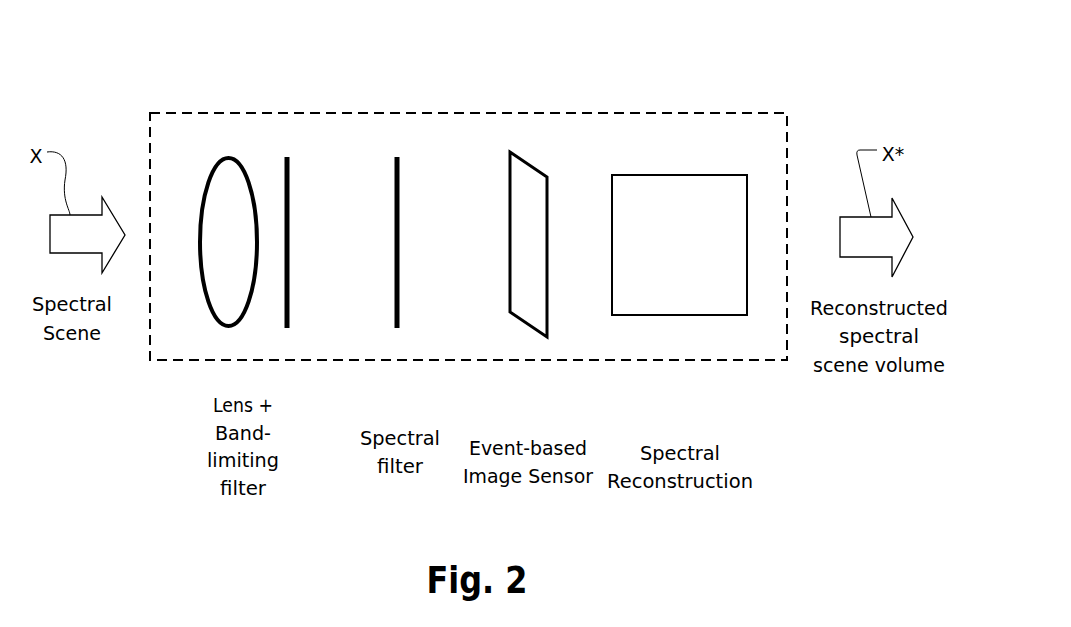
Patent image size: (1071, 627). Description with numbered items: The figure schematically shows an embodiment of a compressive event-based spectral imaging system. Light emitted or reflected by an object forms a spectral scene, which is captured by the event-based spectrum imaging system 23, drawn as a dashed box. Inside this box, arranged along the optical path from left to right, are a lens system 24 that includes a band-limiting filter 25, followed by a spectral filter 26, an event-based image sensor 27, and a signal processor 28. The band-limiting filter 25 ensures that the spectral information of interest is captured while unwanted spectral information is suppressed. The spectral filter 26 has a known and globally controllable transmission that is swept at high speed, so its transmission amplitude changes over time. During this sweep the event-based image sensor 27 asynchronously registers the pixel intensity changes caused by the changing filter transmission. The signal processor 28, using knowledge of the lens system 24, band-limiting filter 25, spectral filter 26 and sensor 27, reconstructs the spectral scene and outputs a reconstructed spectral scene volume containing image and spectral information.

The event-based spectrum imaging system 23 is at (247, 113).
The lens system 24 is at (205, 182).
The band-limiting filter 25 is at (289, 173).
The spectral filter 26 is at (399, 184).
The event-based image sensor 27 is at (549, 204).
The signal processor 28 is at (677, 175).